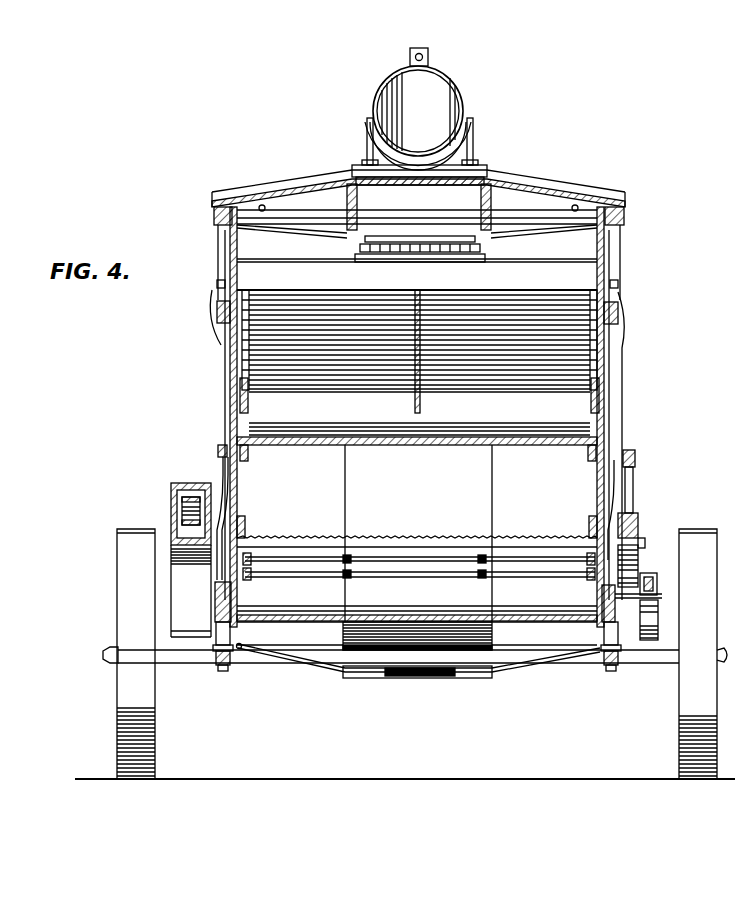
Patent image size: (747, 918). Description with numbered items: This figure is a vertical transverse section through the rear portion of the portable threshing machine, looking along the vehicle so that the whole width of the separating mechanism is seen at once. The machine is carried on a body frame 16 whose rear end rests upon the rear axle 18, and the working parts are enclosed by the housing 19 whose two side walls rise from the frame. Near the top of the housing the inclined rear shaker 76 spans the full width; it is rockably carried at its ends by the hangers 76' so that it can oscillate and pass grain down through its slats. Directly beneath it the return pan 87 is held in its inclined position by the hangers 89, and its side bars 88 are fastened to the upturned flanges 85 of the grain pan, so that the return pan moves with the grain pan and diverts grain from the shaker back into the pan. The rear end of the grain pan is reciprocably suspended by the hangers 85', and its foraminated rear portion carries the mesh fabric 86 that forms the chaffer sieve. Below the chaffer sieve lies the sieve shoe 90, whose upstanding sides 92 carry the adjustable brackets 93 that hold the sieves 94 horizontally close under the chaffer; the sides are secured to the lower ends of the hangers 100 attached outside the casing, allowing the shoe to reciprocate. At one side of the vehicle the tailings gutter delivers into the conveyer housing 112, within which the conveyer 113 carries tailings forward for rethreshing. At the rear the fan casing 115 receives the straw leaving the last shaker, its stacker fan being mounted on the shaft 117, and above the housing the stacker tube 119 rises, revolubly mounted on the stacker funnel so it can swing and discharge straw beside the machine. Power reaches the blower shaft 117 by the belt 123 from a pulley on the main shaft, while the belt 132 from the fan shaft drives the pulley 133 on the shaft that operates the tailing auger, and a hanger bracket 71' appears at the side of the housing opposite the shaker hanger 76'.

The body frame 16 is at (230, 635).
The rear axle 18 is at (189, 656).
The housing 19 is at (230, 398).
The bearing bracket 71' is at (635, 308).
The shaker 76 is at (418, 341).
The hangers 76' is at (204, 309).
The flanges 85 is at (417, 515).
The hangers 85' is at (429, 457).
The chaffer sieve mesh fabric 86 is at (290, 535).
The return pan 87 is at (312, 445).
The side bars 88 is at (250, 458).
The hangers 89 is at (212, 337).
The sieve shoe 90 is at (417, 619).
The sides of the shoe 92 is at (237, 605).
The brackets 93 is at (265, 575).
The sieves 94 is at (388, 572).
The hangers 100 is at (223, 545).
The conveyer housing 112 is at (172, 492).
The conveyer 113 is at (182, 510).
The fan casing 115 is at (418, 533).
The shaft 117 is at (645, 540).
The stacker tube 119 is at (462, 96).
The belt 123 is at (632, 446).
The belt 132 is at (650, 642).
The pulley 133 is at (658, 594).